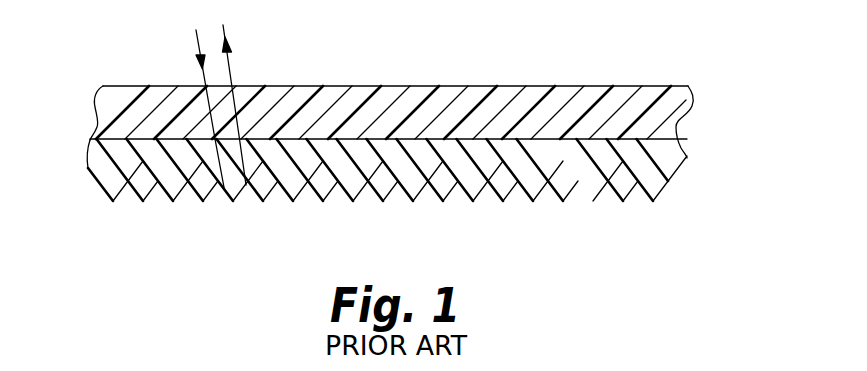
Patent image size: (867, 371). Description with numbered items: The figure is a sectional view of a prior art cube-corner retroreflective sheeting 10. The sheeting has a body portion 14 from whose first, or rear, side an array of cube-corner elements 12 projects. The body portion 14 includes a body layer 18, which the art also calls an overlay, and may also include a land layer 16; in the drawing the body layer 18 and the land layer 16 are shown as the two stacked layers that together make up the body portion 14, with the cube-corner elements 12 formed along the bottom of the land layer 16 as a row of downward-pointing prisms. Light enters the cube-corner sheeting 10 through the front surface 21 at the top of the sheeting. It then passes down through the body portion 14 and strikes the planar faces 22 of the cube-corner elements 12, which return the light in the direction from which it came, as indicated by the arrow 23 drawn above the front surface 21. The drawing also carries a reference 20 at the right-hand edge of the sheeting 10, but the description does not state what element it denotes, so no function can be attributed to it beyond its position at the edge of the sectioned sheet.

The cube-corner retroreflective sheeting 10 is at (570, 38).
The cube-corner elements 12 is at (551, 193).
The body portion 14 is at (700, 83).
The land layer 16 is at (82, 142).
The body layer 18 is at (82, 88).
The edge of film 20 is at (688, 160).
The front surface 21 is at (675, 85).
The planar faces 22 is at (243, 200).
The arrow 23 is at (230, 63).